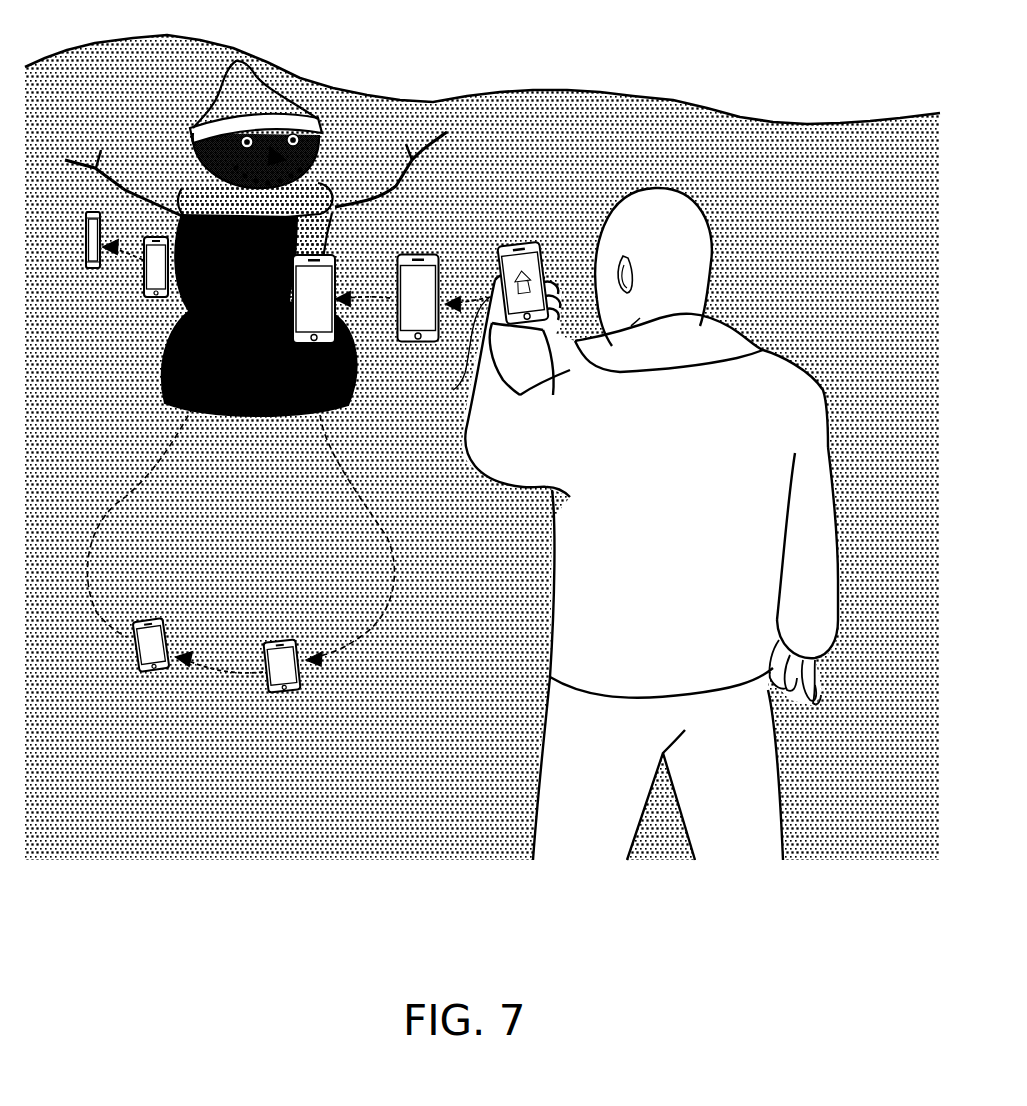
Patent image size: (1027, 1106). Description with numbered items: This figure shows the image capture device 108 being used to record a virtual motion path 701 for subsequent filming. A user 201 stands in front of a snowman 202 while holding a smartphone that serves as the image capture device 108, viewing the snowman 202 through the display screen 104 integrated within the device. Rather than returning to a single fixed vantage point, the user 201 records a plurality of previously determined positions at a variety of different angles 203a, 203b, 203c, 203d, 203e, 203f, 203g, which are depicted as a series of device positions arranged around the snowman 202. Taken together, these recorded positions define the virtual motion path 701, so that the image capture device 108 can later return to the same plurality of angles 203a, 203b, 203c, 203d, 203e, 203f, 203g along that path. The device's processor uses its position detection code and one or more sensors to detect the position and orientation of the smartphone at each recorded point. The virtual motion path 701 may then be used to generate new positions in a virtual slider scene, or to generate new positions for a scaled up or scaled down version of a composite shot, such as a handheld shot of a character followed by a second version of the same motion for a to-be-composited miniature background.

The display screen 104 is at (449, 356).
The image capture device 108 is at (560, 333).
The user 201 is at (707, 506).
The snowman 202 is at (263, 95).
The angle 203a is at (473, 231).
The angle 203b is at (400, 240).
The angle 203c is at (401, 252).
The angle 203d is at (276, 636).
The angle 203e is at (150, 620).
The angle 203f is at (158, 245).
The angle 203g is at (125, 215).
The virtual motion path 701 is at (350, 643).